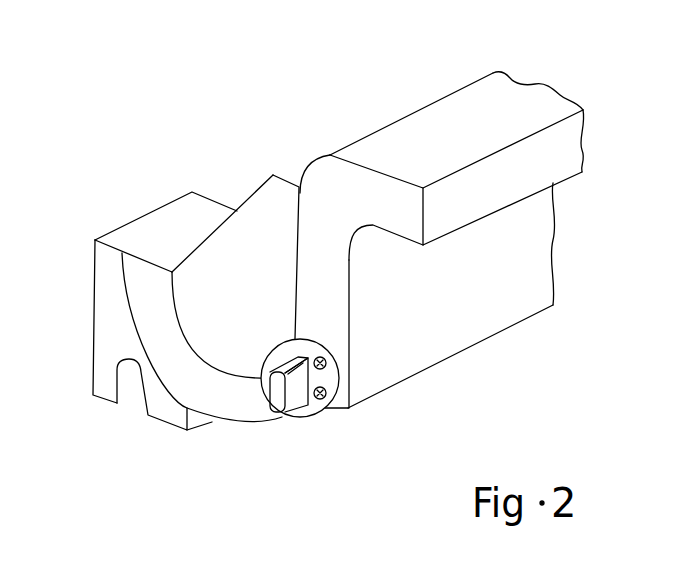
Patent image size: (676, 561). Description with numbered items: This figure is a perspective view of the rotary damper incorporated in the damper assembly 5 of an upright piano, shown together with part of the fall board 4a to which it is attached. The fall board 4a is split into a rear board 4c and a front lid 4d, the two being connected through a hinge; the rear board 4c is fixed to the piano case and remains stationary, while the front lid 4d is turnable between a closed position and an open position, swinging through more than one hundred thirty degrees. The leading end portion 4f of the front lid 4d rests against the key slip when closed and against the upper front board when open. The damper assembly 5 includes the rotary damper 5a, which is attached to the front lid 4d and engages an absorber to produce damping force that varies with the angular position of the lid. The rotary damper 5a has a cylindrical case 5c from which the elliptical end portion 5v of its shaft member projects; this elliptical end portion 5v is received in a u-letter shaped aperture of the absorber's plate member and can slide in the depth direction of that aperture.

The fall board 4a is at (161, 148).
The rear board 4c is at (247, 188).
The front lid 4d is at (408, 114).
The leading end portion 4f is at (520, 110).
The damper assembly 5 is at (462, 432).
The cylindrical case 5c is at (343, 378).
The rotary damper 5a is at (312, 415).
The elliptical end portion 5v is at (271, 401).